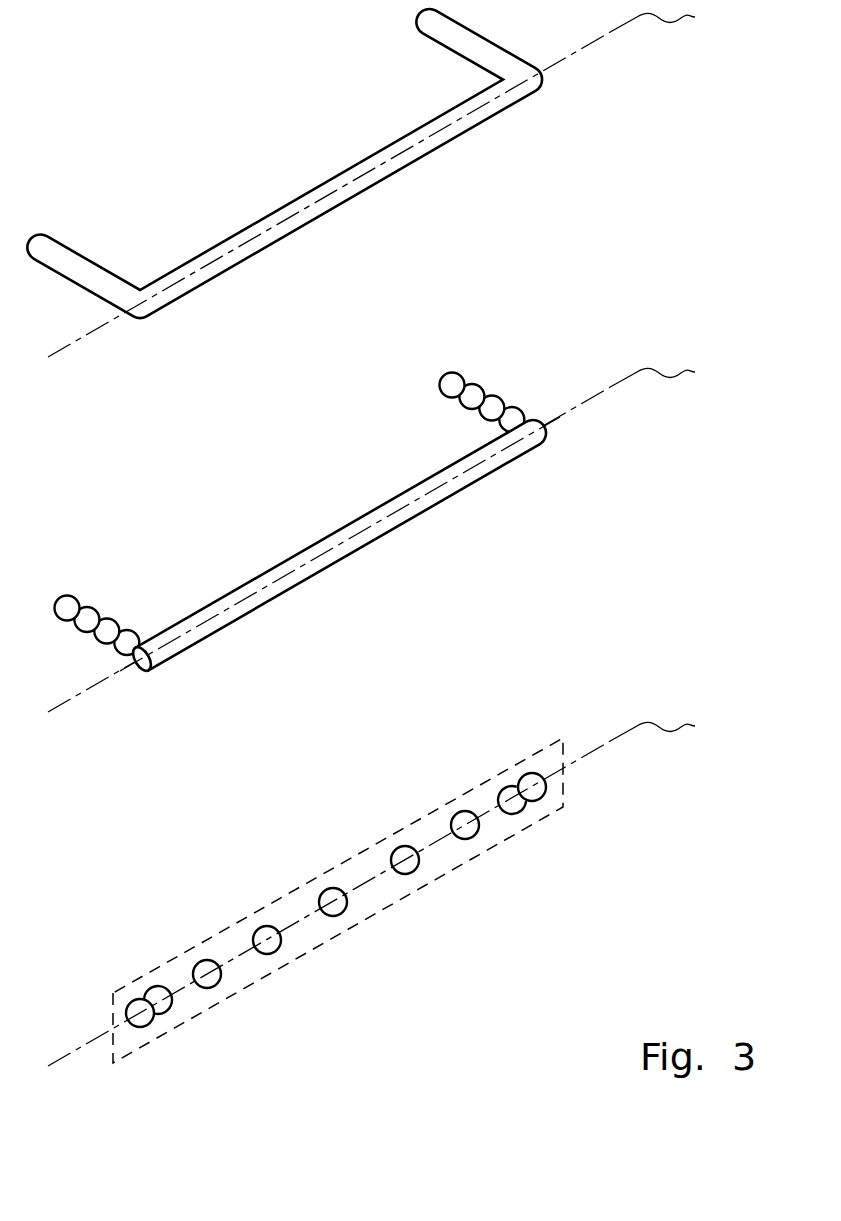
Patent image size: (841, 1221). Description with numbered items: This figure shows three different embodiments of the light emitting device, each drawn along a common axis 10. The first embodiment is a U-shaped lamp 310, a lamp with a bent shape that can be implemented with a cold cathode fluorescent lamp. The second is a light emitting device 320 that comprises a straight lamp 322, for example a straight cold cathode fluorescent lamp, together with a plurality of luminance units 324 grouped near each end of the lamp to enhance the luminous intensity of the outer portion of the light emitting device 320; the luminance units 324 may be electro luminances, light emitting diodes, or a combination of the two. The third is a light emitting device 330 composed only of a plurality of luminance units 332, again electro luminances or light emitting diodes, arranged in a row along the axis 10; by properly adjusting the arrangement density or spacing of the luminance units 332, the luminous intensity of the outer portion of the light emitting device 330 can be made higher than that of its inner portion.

The axis 10 is at (386, 534).
The U-shaped lamp 310 is at (130, 145).
The light emitting device 320 is at (308, 523).
The straight lamp 322 is at (322, 542).
The luminance units 324 is at (112, 621).
The light emitting device 330 is at (310, 900).
The luminance units 332 is at (404, 856).